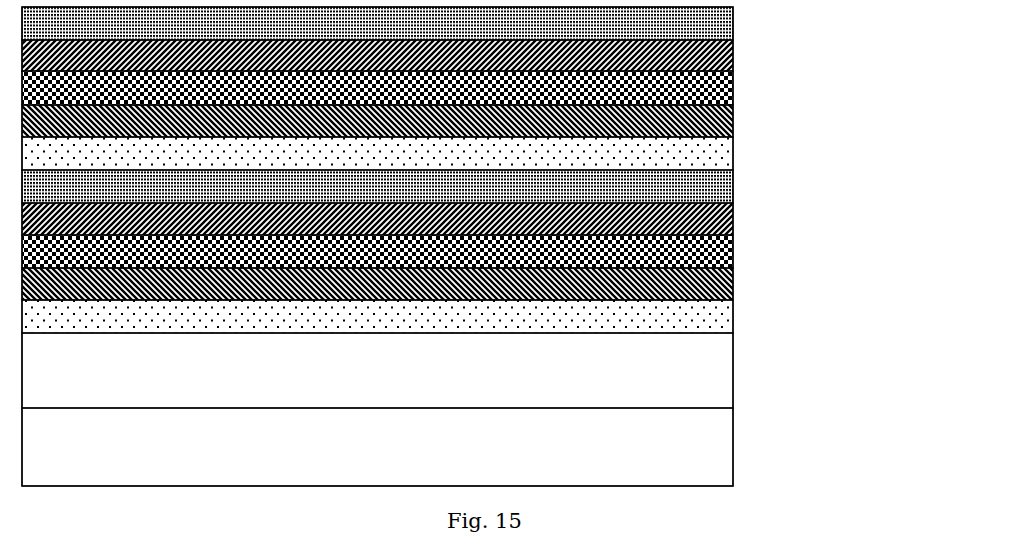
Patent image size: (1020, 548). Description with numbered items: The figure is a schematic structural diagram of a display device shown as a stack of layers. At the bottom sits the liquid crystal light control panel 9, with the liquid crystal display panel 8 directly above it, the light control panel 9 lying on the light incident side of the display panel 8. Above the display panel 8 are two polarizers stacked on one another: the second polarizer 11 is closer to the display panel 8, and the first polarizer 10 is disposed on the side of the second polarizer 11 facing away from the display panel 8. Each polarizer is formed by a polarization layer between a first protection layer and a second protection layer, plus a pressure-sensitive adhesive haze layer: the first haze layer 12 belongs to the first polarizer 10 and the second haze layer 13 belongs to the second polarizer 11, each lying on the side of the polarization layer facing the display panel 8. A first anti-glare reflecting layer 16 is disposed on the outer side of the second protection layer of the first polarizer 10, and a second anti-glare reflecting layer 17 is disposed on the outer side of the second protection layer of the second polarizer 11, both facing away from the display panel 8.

The liquid crystal display panel 8 is at (700, 370).
The liquid crystal light control panel 9 is at (700, 457).
The first polarizer 10 is at (459, 105).
The second polarizer 11 is at (463, 268).
The first haze layer 12 is at (427, 153).
The second haze layer 13 is at (710, 312).
The first anti-glare reflecting layer 16 is at (733, 24).
The second anti-glare reflecting layer 17 is at (733, 187).